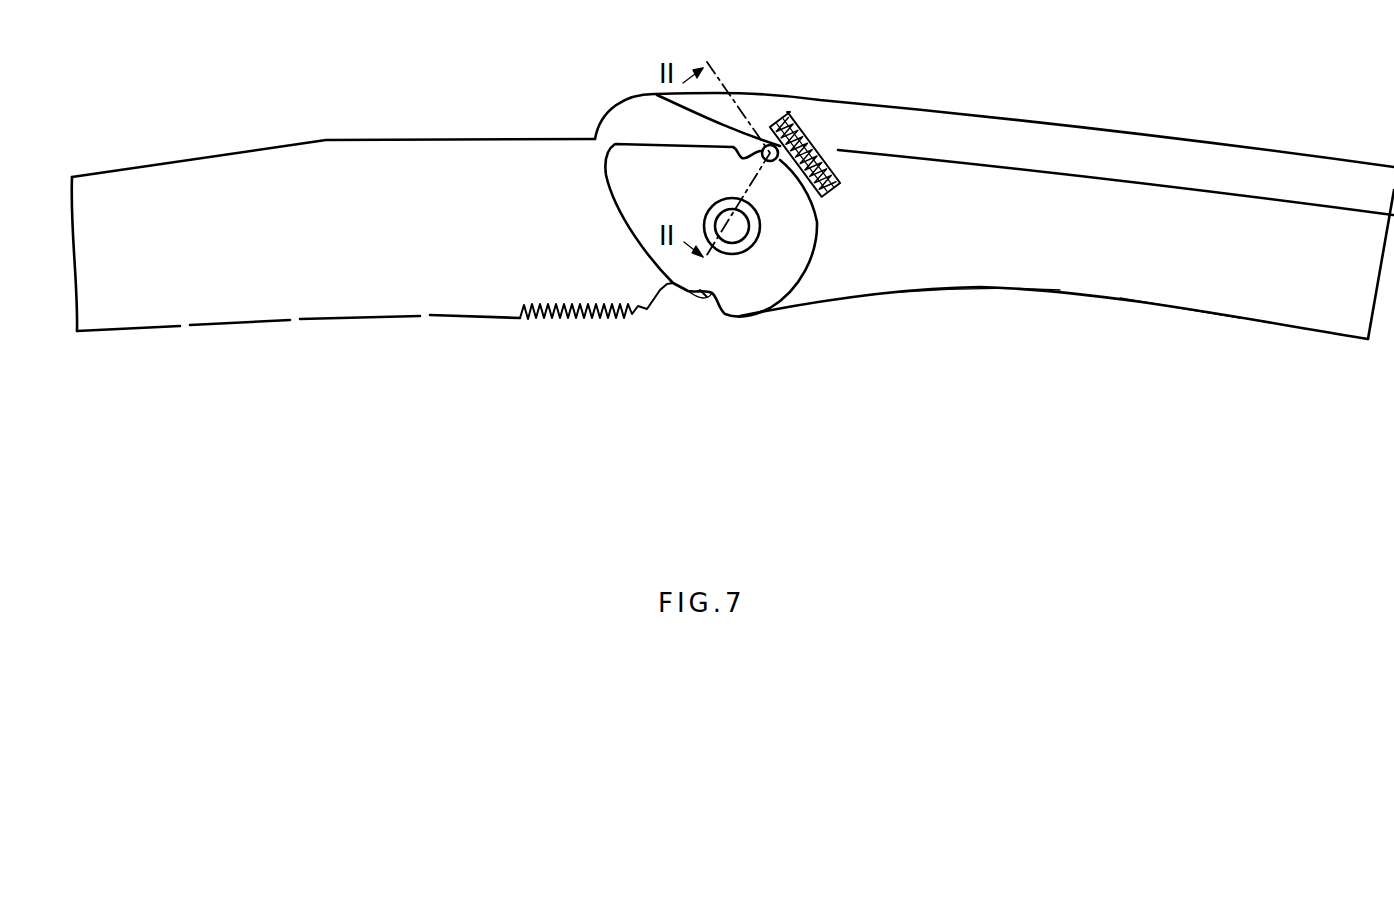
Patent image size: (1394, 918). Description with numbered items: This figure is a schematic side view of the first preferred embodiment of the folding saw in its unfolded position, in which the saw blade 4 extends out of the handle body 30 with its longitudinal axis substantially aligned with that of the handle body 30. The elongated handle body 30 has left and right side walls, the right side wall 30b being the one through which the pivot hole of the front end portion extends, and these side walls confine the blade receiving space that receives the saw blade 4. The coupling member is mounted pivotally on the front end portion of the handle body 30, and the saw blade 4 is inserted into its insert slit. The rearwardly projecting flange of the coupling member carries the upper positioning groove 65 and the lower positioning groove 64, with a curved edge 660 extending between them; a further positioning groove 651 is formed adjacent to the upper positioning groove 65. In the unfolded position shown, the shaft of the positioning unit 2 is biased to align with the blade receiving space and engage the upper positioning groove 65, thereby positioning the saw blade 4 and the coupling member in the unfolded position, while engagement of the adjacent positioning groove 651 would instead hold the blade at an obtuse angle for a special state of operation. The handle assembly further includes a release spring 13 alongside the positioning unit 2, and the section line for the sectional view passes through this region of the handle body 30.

The positioning unit 2 is at (772, 165).
The saw blade 4 is at (554, 258).
The release spring 13 is at (797, 145).
The handle body 30 is at (1133, 277).
The right side wall 30b is at (1016, 268).
The lower positioning groove 64 is at (707, 300).
The upper positioning groove 65 is at (822, 160).
The positioning groove 651 is at (742, 143).
The curved edge 660 is at (800, 283).